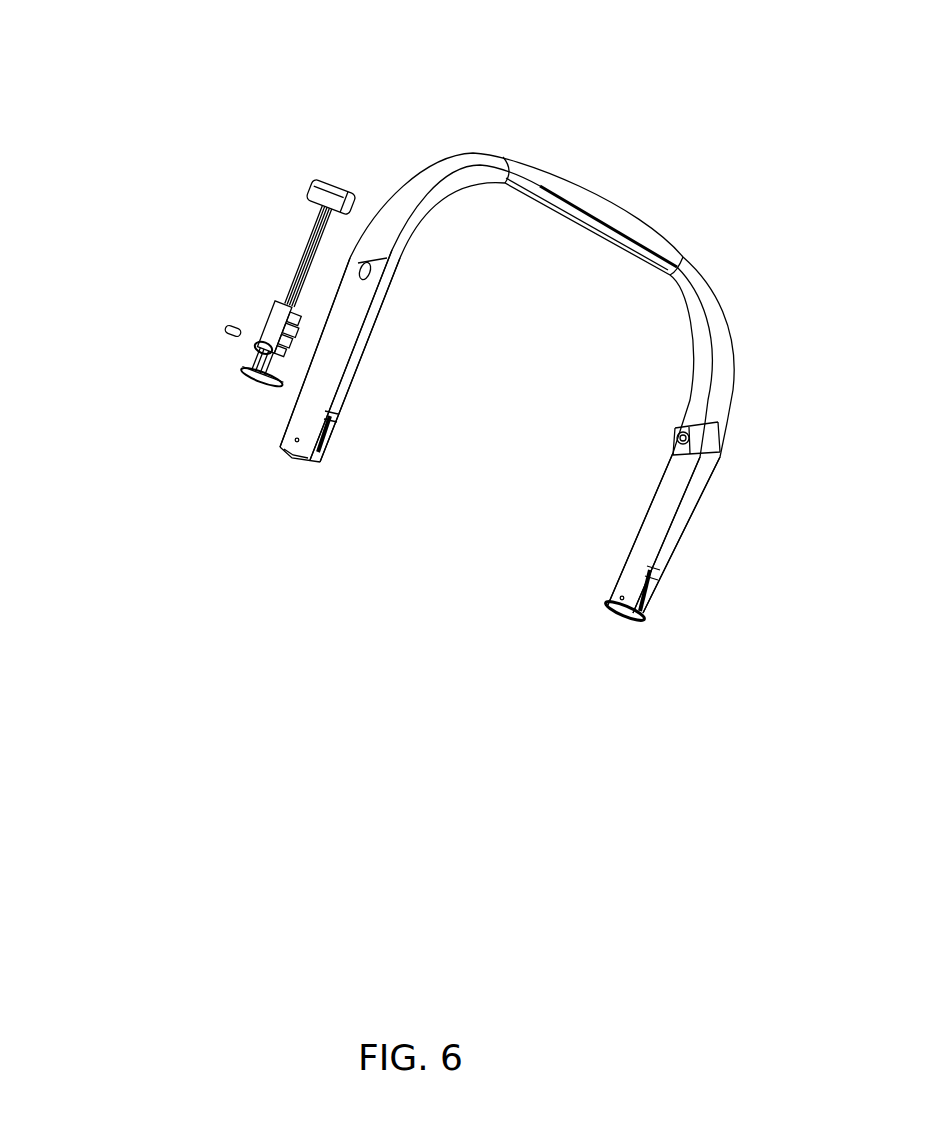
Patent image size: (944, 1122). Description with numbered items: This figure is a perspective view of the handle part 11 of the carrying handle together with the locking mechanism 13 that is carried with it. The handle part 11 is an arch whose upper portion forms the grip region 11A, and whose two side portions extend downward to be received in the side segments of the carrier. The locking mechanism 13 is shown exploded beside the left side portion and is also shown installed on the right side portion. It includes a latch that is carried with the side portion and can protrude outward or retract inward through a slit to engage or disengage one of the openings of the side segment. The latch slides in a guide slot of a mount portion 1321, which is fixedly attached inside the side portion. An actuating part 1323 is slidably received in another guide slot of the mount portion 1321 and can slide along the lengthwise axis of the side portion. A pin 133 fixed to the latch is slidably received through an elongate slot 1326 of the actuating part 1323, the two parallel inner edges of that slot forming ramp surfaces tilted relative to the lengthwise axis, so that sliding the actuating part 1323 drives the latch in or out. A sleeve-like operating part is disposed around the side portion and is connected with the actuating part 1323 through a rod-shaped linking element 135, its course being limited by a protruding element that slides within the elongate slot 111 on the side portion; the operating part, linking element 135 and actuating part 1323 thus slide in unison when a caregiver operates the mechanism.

The handle part 11 is at (474, 152).
The grip portion 11A is at (605, 210).
The elongate slot 111 is at (366, 258).
The locking mechanism 13 is at (302, 130).
The linking element 135 is at (312, 203).
The mount portion 1321 is at (283, 316).
The actuating part 1323 is at (281, 337).
The elongate slot 1326 is at (246, 354).
The pin 133 is at (228, 330).